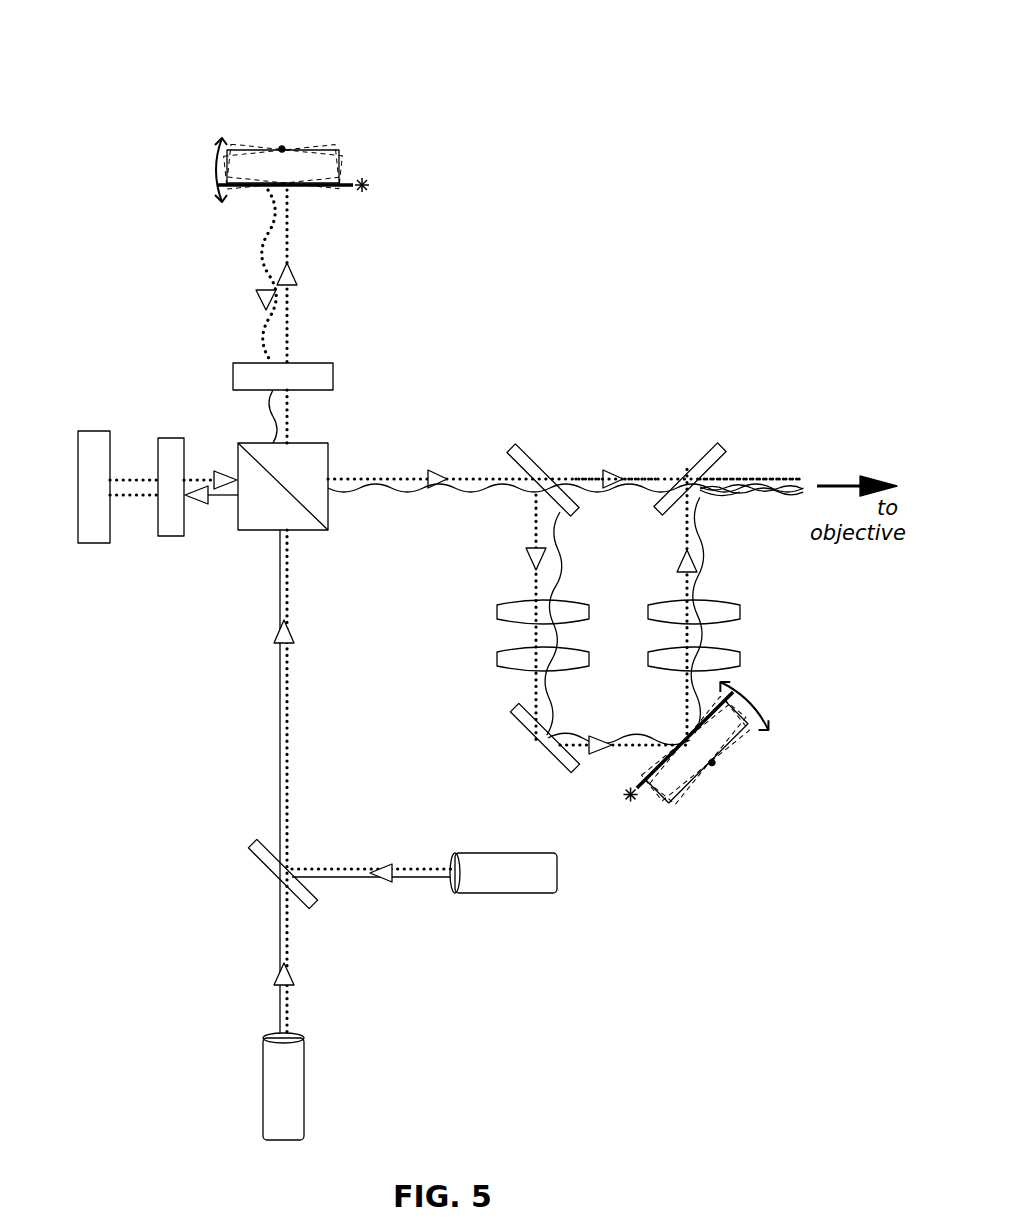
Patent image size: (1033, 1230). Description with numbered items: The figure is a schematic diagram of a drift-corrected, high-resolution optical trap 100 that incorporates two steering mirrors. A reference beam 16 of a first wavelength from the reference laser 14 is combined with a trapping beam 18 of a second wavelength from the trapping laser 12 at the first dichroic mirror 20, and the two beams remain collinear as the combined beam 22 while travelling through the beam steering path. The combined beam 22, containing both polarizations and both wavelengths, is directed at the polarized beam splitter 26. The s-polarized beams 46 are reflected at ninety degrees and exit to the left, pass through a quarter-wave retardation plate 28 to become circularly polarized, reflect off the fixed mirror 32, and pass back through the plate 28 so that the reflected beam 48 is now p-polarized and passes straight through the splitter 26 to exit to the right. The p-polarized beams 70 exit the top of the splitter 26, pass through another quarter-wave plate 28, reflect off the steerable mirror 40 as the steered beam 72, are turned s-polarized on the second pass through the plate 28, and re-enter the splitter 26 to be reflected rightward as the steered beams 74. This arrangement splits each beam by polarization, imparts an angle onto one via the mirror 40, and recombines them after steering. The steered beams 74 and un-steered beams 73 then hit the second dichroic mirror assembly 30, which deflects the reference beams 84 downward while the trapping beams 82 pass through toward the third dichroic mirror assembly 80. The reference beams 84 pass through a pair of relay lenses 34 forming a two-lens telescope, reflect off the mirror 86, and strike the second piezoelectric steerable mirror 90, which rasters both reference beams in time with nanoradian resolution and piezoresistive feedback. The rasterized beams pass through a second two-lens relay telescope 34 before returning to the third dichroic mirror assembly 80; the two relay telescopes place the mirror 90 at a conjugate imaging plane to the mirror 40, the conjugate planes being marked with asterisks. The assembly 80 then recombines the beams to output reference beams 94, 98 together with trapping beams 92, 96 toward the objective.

The drift-corrected, high-resolution optical trap 100 is at (130, 52).
The steerable mirror 40 is at (300, 165).
The p-polarized beams 70 is at (297, 312).
The steered beam 72 is at (262, 315).
The λ/4 retardation plate 28 is at (315, 363).
The fixed mirror 32 is at (97, 431).
The reflected beam 48 is at (128, 480).
The polarized beam splitter 26 is at (320, 443).
The s-polarized beams 46 is at (222, 498).
The un-steered beams 73 is at (355, 479).
The steered beams 74 is at (385, 492).
The second dichroic mirror assembly 30 is at (552, 468).
The trapping beams 82 is at (640, 479).
The third dichroic mirror assembly 80 is at (710, 460).
The output reference beam 94 is at (760, 479).
The output trapping beam 92 is at (785, 479).
The output reference beam 98 is at (750, 492).
The output trapping beam 96 is at (730, 498).
The relay lenses 34 is at (503, 600).
The reference beams 84 is at (562, 590).
The mirror 86 is at (510, 728).
The second steerable mirror 90 is at (733, 742).
The combined beam 22 is at (290, 750).
The first dichroic mirror 20 is at (255, 848).
The reference beam 16 is at (350, 869).
The reference laser 14 is at (520, 853).
The trapping beam 18 is at (292, 955).
The trapping laser 12 is at (304, 1080).